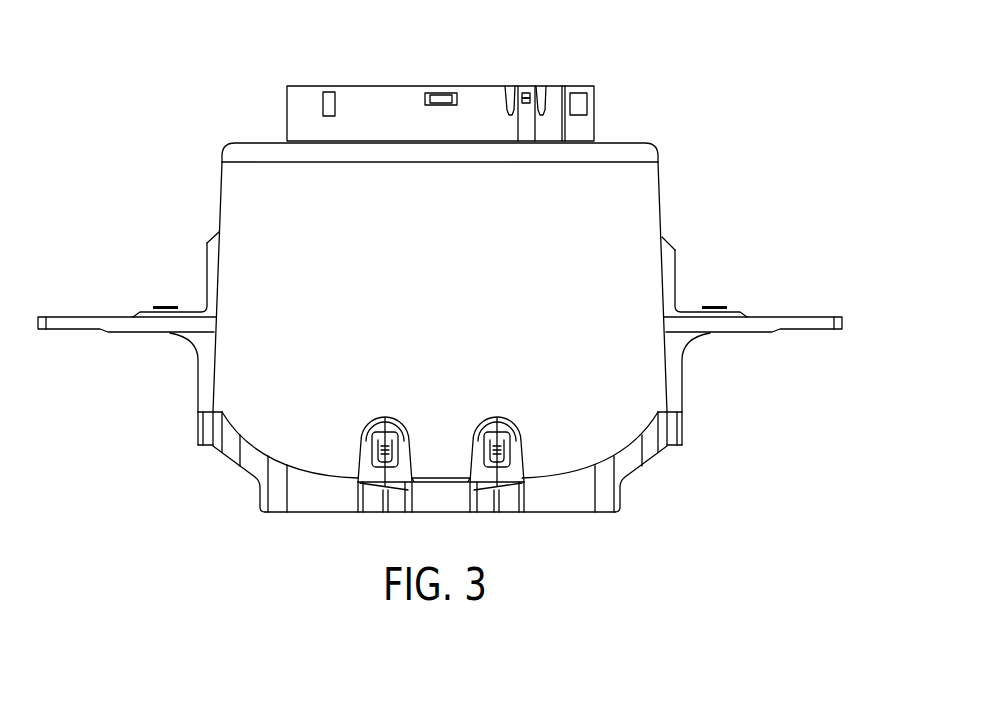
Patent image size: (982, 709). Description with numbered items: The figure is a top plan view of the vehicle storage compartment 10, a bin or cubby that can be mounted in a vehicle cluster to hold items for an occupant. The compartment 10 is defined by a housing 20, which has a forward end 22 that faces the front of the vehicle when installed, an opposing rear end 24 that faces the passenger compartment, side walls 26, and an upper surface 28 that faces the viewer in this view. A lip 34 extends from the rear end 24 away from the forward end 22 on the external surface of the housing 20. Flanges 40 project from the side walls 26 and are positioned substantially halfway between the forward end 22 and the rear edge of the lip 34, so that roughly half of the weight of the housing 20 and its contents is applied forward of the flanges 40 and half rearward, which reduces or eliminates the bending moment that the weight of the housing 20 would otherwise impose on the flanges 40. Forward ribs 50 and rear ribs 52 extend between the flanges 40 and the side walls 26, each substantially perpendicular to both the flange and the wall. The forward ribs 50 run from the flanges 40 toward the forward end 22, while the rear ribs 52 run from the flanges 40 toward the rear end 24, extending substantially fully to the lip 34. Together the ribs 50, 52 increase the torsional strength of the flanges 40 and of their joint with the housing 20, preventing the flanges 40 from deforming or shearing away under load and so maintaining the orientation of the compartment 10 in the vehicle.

The vehicle storage compartment 10 is at (636, 94).
The housing 20 is at (555, 199).
The forward end 22 is at (245, 141).
The rear end 24 is at (320, 473).
The side walls 26 is at (222, 197).
The upper surface 28 is at (603, 223).
The lip 34 is at (567, 497).
The flanges 40 is at (115, 325).
The forward ribs 50 is at (212, 260).
The rear ribs 52 is at (202, 342).